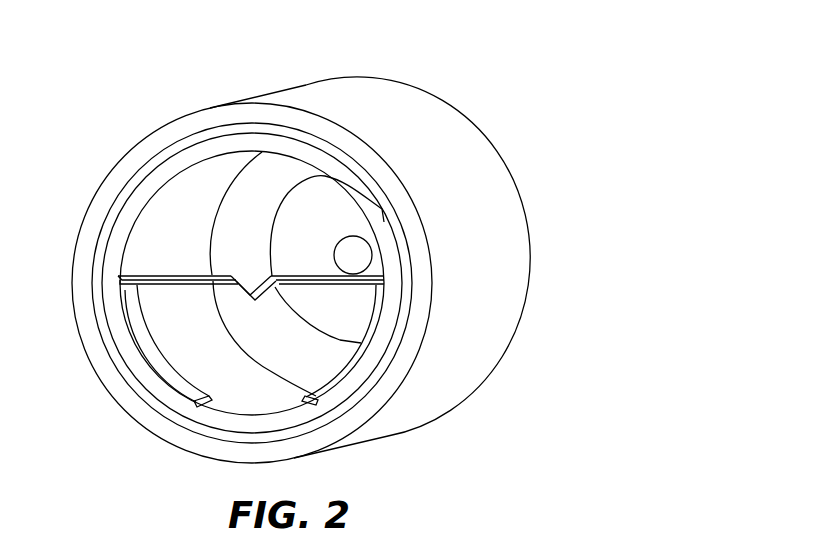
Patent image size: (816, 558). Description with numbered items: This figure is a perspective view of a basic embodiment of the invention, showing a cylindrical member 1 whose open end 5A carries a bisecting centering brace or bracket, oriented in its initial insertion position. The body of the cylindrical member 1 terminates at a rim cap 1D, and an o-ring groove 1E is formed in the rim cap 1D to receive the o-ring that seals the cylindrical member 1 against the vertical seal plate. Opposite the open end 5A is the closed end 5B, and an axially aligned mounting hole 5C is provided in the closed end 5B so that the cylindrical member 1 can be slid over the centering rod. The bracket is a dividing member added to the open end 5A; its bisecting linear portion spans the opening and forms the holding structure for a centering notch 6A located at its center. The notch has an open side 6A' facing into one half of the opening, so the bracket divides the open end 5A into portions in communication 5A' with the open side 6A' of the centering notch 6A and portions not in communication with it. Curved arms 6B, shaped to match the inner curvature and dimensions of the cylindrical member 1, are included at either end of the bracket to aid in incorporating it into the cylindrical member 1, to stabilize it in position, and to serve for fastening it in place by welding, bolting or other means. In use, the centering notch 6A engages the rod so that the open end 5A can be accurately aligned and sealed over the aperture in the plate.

The cylindrical member 1 is at (236, 88).
The rim cap 1D is at (122, 172).
The o-ring groove 1E is at (165, 155).
The portions in communication 5A' is at (214, 210).
The open end 5A is at (203, 269).
The closed end 5B is at (315, 200).
The mounting hole 5C is at (348, 236).
The centering notch 6A is at (243, 332).
The open side 6A' is at (256, 232).
The curved arms 6B is at (138, 346).